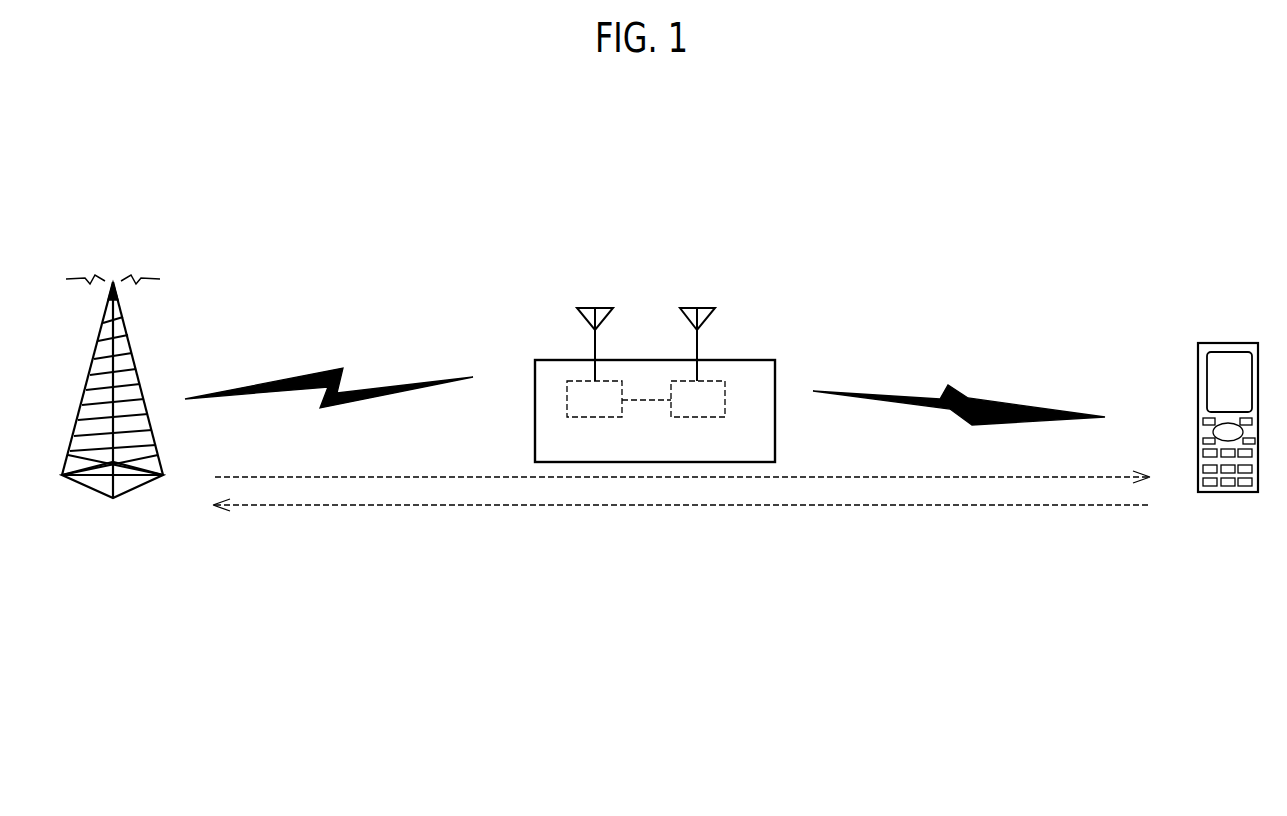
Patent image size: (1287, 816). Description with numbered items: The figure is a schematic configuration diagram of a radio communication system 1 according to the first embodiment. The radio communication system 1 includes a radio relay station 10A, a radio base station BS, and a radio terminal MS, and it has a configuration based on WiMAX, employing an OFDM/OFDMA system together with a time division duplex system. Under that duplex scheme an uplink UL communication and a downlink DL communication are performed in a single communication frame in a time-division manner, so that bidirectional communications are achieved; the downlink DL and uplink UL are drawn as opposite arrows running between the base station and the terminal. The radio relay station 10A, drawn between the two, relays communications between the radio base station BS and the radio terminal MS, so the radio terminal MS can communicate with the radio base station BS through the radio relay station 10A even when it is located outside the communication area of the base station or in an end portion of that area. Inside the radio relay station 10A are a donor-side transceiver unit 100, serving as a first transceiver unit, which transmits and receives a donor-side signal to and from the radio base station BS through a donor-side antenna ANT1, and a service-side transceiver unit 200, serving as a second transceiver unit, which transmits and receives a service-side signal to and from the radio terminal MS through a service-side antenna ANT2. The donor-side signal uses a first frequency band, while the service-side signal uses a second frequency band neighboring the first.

The radio communication system 1 is at (846, 156).
The radio base station BS is at (135, 352).
The radio terminal MS is at (1228, 343).
The radio relay station 10A is at (733, 360).
The donor-side transceiver unit 100 is at (567, 400).
The service-side transceiver unit 200 is at (725, 405).
The donor-side antenna ANT1 is at (637, 285).
The service-side antenna ANT2 is at (735, 285).
The downlink communication DL is at (834, 476).
The uplink communication UL is at (815, 507).